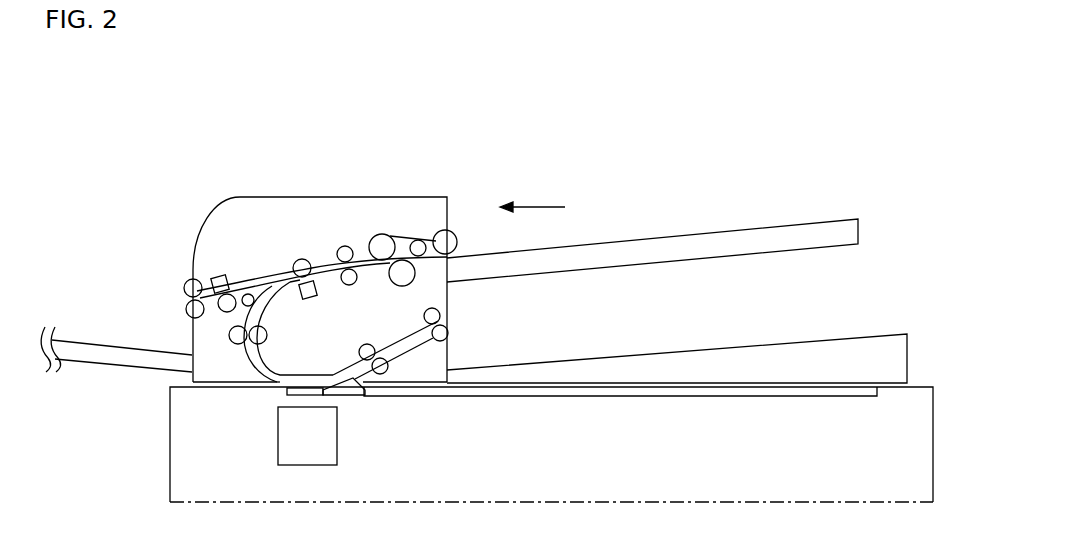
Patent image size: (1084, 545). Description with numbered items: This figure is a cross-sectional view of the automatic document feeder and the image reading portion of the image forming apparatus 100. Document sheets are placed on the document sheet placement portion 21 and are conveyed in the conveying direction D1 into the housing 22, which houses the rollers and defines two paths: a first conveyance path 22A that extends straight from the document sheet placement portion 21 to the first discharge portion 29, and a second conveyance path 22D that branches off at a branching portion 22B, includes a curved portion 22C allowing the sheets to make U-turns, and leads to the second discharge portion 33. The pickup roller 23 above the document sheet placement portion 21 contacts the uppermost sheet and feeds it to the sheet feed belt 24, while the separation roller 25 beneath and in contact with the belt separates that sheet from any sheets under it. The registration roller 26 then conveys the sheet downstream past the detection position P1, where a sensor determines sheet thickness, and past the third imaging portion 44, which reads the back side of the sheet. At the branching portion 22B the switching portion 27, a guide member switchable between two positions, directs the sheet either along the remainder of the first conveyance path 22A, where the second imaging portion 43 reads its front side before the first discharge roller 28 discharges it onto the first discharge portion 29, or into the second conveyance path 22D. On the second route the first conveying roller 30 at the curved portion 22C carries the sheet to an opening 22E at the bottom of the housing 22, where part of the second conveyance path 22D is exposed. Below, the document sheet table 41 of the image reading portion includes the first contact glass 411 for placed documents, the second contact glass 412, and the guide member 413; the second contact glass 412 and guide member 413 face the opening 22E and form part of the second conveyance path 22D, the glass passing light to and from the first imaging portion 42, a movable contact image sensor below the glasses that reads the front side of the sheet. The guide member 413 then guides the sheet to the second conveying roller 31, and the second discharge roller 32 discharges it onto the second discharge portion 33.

The image reading apparatus 100 is at (185, 135).
The housing 22 is at (316, 197).
The first conveyance path 22A is at (325, 263).
The branching portion 22B is at (272, 284).
The curved portion 22C is at (247, 355).
The second conveyance path 22D is at (418, 349).
The opening 22E is at (305, 383).
The document sheet placement portion 21 is at (633, 238).
The pickup roller 23 is at (450, 231).
The sheet feed belt 24 is at (393, 235).
The separation roller 25 is at (418, 276).
The registration roller 26 is at (343, 246).
The switching portion 27 is at (255, 280).
The first discharge roller 28 is at (184, 291).
The first discharge portion 29 is at (95, 340).
The first conveying roller 30 is at (265, 335).
The second conveying roller 31 is at (371, 346).
The second discharge roller 32 is at (443, 313).
The second discharge portion 33 is at (620, 356).
The document sheet table 41 is at (920, 378).
The first contact glass 411 is at (626, 397).
The second contact glass 412 is at (287, 392).
The guide member 413 is at (352, 397).
The first imaging portion 42 is at (278, 440).
The second imaging portion 43 is at (219, 276).
The third imaging portion 44 is at (311, 298).
The detection position P1 is at (323, 273).
The conveying direction D1 is at (537, 205).